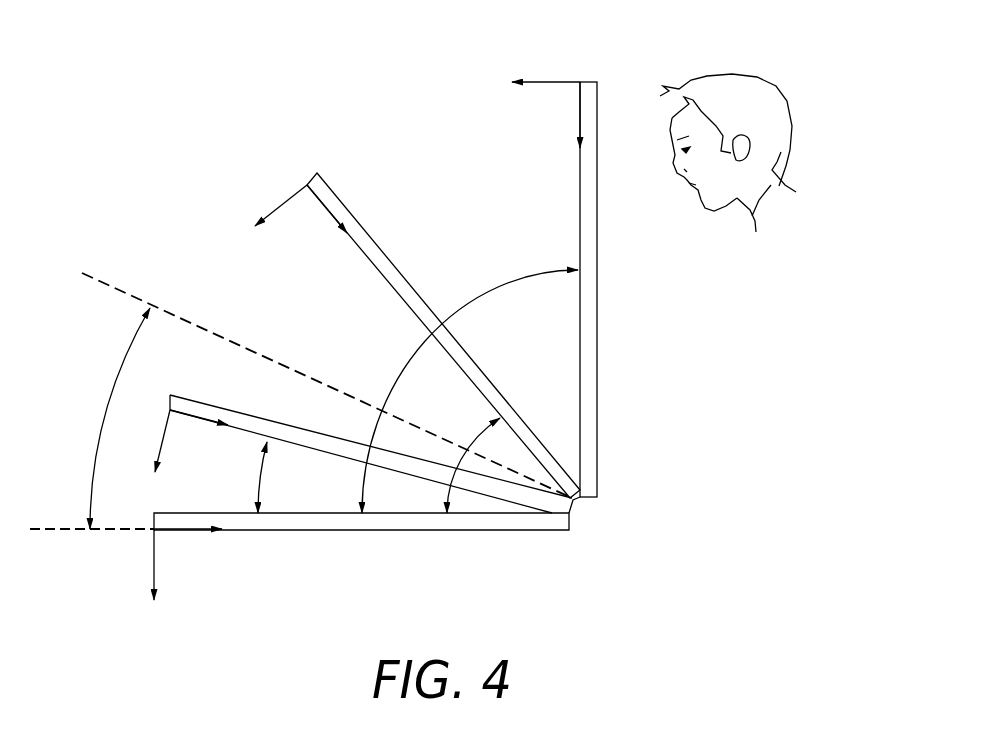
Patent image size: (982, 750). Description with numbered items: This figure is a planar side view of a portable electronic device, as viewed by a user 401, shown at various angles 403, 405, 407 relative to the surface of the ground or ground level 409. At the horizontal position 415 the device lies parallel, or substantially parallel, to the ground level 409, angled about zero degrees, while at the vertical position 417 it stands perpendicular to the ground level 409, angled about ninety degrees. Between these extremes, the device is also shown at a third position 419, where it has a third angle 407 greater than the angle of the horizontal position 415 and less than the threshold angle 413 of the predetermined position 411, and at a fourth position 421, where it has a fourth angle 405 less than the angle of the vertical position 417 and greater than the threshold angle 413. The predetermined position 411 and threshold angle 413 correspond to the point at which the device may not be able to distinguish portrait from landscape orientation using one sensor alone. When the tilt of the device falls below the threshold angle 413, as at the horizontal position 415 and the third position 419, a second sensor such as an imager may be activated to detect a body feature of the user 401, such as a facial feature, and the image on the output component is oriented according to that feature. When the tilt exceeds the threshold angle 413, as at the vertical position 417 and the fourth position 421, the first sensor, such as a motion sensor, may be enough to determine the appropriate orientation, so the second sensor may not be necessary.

The user 401 is at (748, 219).
The tilt angle 403 is at (493, 294).
The fourth angle 405 is at (463, 446).
The third angle 407 is at (256, 475).
The ground level 409 is at (65, 531).
The predetermined position 411 is at (221, 336).
The threshold angle 413 is at (108, 368).
The horizontal position 415 is at (515, 523).
The vertical position 417 is at (597, 287).
The third position 419 is at (263, 422).
The fourth position 421 is at (373, 238).